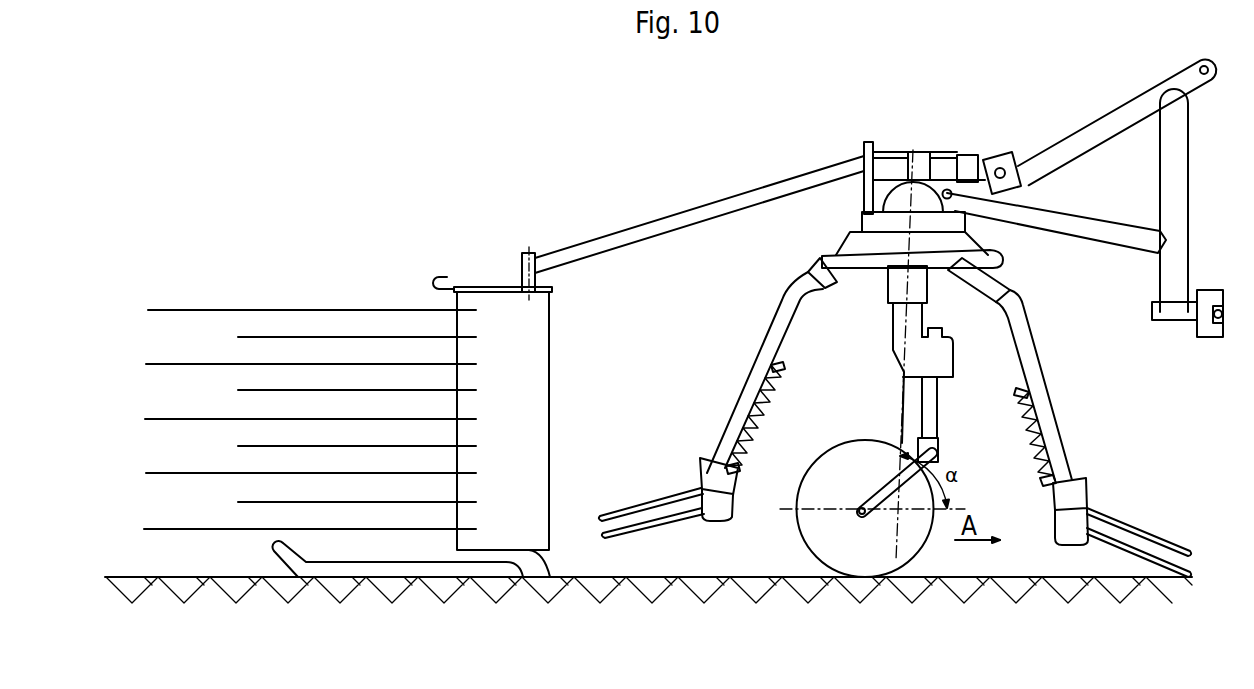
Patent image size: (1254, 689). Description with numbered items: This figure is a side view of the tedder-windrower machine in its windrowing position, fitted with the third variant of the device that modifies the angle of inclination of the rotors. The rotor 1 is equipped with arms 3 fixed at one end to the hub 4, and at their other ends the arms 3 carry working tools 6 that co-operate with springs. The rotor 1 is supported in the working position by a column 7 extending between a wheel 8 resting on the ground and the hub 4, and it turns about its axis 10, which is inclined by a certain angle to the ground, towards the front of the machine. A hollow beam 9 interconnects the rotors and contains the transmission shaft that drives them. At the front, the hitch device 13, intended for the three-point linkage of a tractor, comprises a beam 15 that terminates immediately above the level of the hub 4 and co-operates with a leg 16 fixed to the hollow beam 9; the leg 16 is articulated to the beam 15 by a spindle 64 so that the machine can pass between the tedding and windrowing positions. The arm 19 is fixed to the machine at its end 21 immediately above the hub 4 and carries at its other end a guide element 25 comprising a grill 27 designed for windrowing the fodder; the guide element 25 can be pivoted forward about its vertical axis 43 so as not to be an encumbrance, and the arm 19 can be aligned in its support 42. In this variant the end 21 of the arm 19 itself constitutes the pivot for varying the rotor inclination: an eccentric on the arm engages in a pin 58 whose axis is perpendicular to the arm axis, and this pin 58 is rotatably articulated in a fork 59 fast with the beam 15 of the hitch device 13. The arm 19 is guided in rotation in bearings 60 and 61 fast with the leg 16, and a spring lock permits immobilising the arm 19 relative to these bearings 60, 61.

The rotor 1 is at (838, 246).
The arms 3 is at (754, 379).
The hub 4 is at (960, 254).
The working tools 6 is at (647, 504).
The column 7 is at (942, 380).
The wheel 8 is at (850, 450).
The hollow beam 9 is at (882, 203).
The axis 10 is at (901, 391).
The hitch device 13 is at (1191, 175).
The beam 15 is at (1073, 227).
The leg 16 is at (940, 152).
The arm 19 is at (670, 214).
The end 21 is at (883, 160).
The guide element 25 is at (550, 388).
The grill 27 is at (298, 308).
The support 42 is at (866, 150).
The vertical axis 43 is at (522, 246).
The pin 58 is at (1006, 160).
The fork 59 is at (1000, 168).
The bearing 60 is at (905, 153).
The bearing 61 is at (967, 156).
The spindle 64 is at (950, 200).